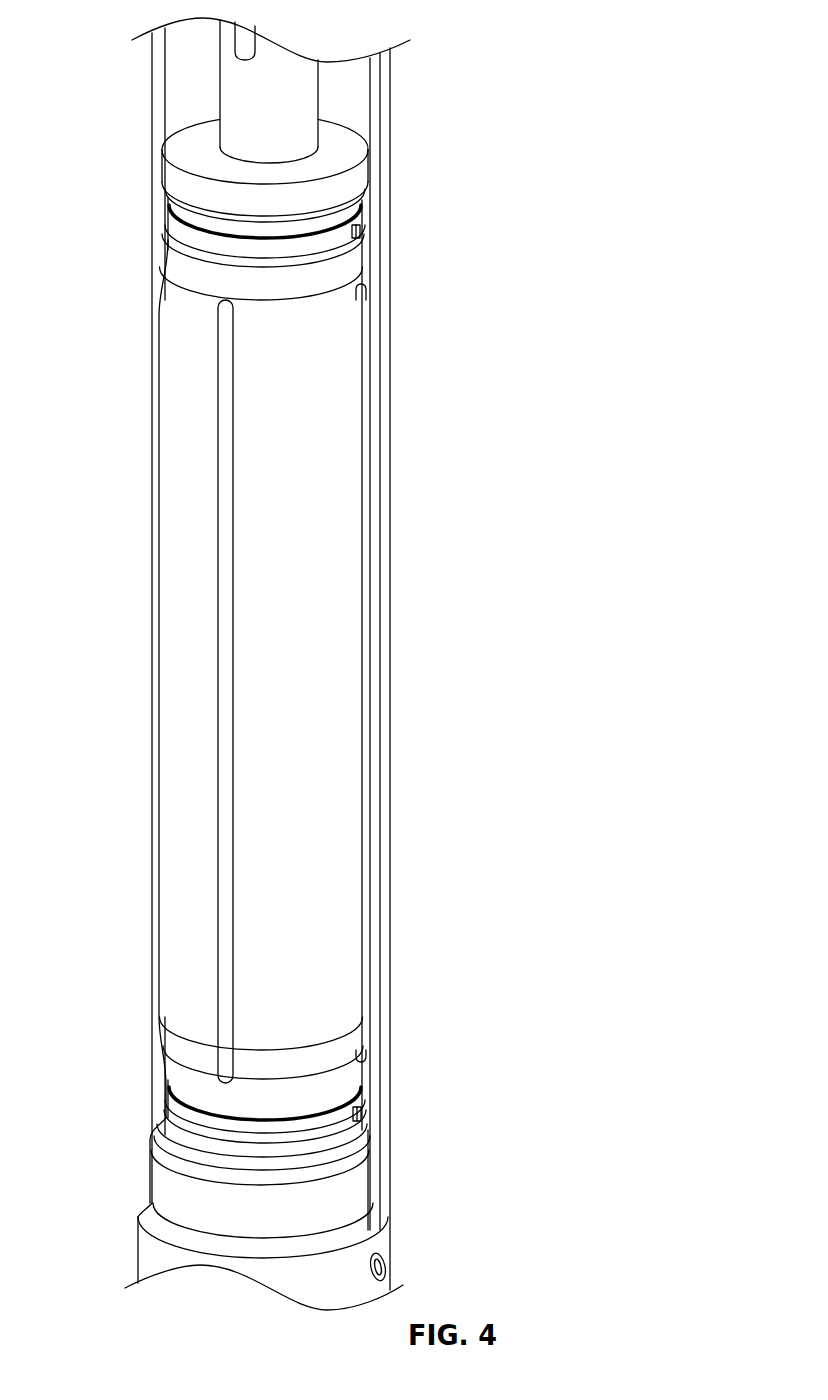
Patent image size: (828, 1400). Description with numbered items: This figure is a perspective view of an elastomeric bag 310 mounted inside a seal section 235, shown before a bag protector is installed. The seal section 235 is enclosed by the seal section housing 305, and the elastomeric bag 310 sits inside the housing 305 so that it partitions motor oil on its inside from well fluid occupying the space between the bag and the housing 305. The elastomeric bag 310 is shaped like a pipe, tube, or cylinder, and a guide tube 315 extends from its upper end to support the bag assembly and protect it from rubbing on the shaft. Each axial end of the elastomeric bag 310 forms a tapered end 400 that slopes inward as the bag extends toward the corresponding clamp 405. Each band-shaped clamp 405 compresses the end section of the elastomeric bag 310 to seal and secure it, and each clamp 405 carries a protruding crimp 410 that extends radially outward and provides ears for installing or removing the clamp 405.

The seal section 235 is at (400, 120).
The seal section housing 305 is at (373, 873).
The elastomeric bag 310 is at (245, 577).
The guide tube 315 is at (243, 115).
The tapered end 400 is at (155, 235).
The clamp 405 is at (318, 240).
The crimp 410 is at (363, 230).